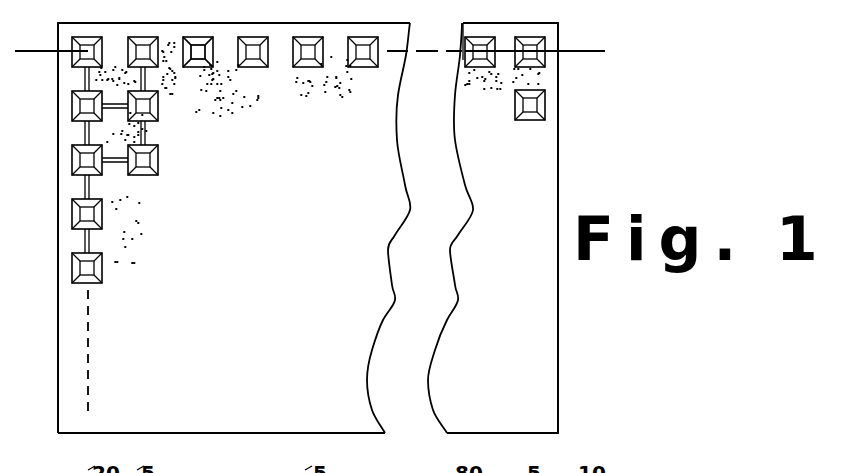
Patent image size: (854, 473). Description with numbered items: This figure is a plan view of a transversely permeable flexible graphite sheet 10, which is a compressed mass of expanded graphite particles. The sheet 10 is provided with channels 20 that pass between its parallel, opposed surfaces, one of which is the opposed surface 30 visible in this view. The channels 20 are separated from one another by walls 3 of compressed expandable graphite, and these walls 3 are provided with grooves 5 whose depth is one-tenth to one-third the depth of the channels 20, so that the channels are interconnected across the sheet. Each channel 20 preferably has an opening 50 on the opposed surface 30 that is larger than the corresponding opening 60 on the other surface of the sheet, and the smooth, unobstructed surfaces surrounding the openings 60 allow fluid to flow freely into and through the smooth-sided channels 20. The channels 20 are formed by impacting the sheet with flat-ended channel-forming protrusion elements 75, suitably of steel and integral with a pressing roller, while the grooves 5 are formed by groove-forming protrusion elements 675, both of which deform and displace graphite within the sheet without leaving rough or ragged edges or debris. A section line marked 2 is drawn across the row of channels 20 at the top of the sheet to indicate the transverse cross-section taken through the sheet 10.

The flexible graphite sheet 10 is at (575, 165).
The channels 20 is at (196, 34).
The grooves 5 is at (82, 238).
The walls 3 is at (101, 79).
The openings 60 is at (193, 56).
The openings 50 is at (210, 52).
The opposed surface 30 is at (512, 358).
The section line for FIG. 2 is at (31, 72).
The channel-forming protrusion element 75 is at (677, 472).
The groove-forming protrusion element 675 is at (727, 472).